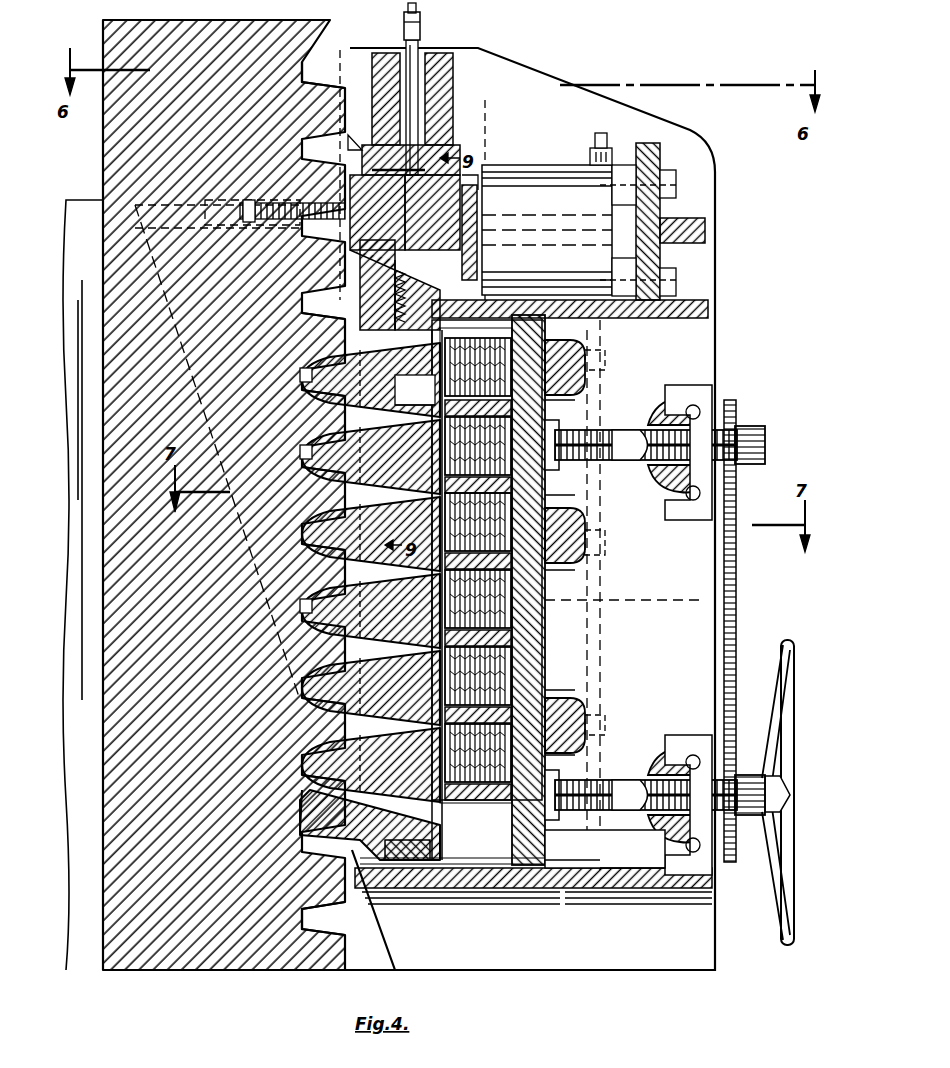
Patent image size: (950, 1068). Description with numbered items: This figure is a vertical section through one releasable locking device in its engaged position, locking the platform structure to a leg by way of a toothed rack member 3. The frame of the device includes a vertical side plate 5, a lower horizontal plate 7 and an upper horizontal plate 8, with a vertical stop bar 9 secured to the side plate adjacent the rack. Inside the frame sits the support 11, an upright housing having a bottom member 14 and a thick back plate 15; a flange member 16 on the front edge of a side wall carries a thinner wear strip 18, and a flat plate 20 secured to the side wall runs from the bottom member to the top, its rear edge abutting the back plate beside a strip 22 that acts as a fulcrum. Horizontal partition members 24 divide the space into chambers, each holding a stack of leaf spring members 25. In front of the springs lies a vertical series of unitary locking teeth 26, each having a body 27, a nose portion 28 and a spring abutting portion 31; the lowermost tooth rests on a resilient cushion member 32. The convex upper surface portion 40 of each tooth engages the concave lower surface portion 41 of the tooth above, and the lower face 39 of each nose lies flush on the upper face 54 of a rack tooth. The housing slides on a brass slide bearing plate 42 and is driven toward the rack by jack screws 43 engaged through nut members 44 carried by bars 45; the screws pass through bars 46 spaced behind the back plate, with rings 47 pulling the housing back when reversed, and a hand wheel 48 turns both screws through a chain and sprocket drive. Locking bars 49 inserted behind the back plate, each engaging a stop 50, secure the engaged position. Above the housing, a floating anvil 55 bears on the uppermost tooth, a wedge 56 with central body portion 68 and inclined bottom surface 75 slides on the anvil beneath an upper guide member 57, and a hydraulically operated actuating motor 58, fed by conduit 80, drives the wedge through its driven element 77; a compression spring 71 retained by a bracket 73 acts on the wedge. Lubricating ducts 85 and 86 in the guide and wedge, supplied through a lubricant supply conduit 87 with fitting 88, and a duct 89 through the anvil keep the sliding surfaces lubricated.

The rack member 3 is at (240, 972).
The vertical side plate 5 is at (712, 178).
The lower horizontal plate 7 is at (610, 888).
The upper horizontal plate 8 is at (688, 300).
The vertical stop bar 9 is at (312, 320).
The support 11 is at (585, 690).
The bottom member 14 is at (626, 904).
The back plate 15 is at (572, 846).
The flange member 16 is at (304, 810).
The wear strip 18 is at (395, 845).
The flat plate 20 is at (452, 843).
The strip 22 is at (545, 500).
The horizontal partition member 24 is at (496, 826).
The leaf spring member 25 is at (485, 330).
The locking tooth 26 is at (305, 422).
The body 27 is at (415, 387).
The nose portion 28 is at (302, 370).
The spring abutting portion 31 is at (388, 572).
The resilient cushion member 32 is at (461, 904).
The lower face 39 is at (310, 492).
The convex upper surface portion 40 is at (371, 572).
The concave lower surface portion 41 is at (416, 595).
The slide bearing plate 42 is at (600, 865).
The jack screw 43 is at (630, 460).
The nut member 44 is at (650, 395).
The bar 45 is at (665, 508).
The bar 46 is at (570, 430).
The ring 47 is at (561, 608).
The hand wheel 48 is at (780, 940).
The locking bar 49 is at (580, 340).
The stop 50 is at (616, 703).
The upper face 54 is at (308, 928).
The floating anvil 55 is at (358, 262).
The wedge 56 is at (350, 190).
The upper guide member 57 is at (455, 130).
The hydraulically operated actuating motor 58 is at (575, 178).
The central body portion 68 is at (478, 205).
The compression spring 71 is at (275, 200).
The bracket 73 is at (245, 200).
The bottom surface 75 is at (440, 282).
The driven element 77 is at (478, 178).
The conduit 80 is at (595, 140).
The lubricating duct 85 is at (372, 158).
The lubricating duct 86 is at (411, 160).
The lubricant supply conduit 87 is at (406, 52).
The fitting 88 is at (420, 22).
The lubricating duct 89 is at (392, 285).